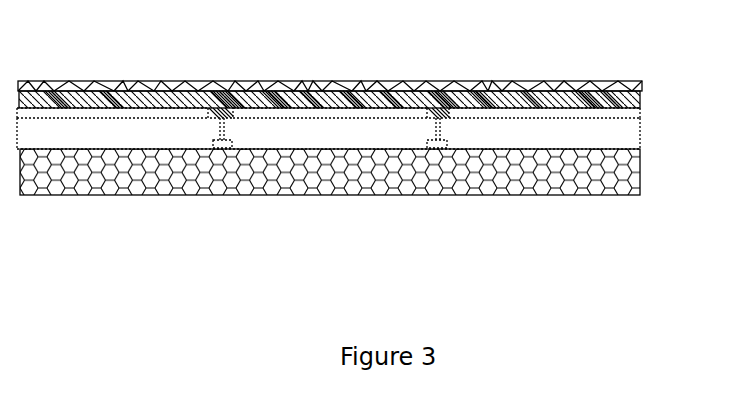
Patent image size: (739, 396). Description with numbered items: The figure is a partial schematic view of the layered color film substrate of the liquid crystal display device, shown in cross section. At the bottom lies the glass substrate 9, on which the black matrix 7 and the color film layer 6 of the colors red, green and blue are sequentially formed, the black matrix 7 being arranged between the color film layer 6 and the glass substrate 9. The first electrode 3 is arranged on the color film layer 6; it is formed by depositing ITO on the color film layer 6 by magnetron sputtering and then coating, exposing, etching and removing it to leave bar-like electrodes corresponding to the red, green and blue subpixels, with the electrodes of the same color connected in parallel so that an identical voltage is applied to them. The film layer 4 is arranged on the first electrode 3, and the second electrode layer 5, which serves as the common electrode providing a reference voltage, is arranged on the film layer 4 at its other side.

The first electrode 3 is at (636, 82).
The film layer 4 is at (640, 100).
The second electrode layer 5 is at (641, 116).
The color film layer 6 is at (624, 132).
The black matrix 7 is at (430, 142).
The glass substrate 9 is at (620, 168).